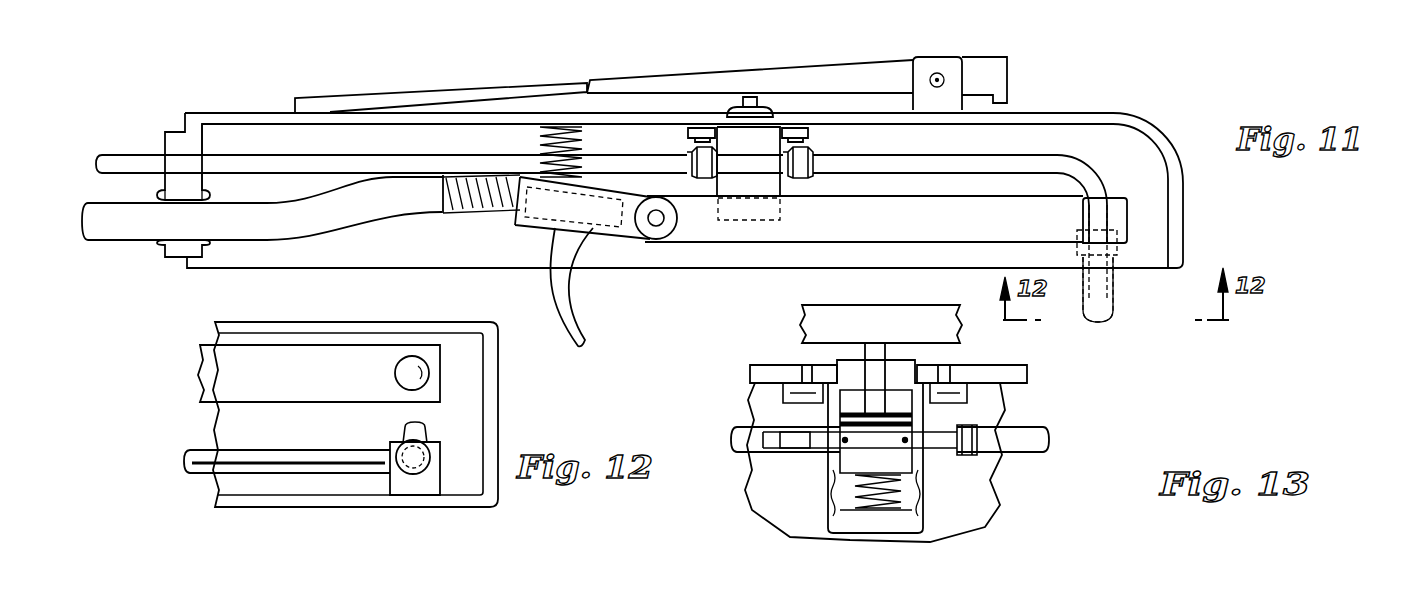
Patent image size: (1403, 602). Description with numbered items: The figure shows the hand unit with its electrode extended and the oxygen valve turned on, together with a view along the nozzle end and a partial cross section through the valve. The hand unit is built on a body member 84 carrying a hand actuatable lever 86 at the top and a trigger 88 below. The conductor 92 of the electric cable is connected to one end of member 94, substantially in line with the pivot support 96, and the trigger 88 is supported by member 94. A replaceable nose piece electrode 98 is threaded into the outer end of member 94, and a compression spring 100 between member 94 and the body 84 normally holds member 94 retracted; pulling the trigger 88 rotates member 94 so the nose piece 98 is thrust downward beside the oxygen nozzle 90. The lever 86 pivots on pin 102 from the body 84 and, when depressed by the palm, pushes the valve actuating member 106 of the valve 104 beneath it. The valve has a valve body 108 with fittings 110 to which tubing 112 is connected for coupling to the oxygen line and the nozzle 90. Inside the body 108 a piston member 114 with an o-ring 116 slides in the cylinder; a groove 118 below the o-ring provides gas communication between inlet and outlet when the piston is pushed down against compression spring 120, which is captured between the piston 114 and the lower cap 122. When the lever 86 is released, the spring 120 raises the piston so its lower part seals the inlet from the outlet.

In FIG. 11, the body member 84 is at (213, 113).
In FIG. 11, the hand actuatable lever 86 is at (467, 90).
In FIG. 13, the hand actuatable lever 86 is at (867, 315).
In FIG. 11, the trigger 88 is at (555, 295).
In FIG. 11, the oxygen nozzle 90 is at (1102, 302).
In FIG. 12, the oxygen nozzle 90 is at (427, 440).
In FIG. 11, the conductor 92 is at (477, 200).
In FIG. 11, the member 94 is at (813, 230).
In FIG. 11, the pivot support 96 is at (655, 226).
In FIG. 12, the nose piece electrode 98 is at (407, 358).
In FIG. 11, the compression spring 100 is at (537, 138).
In FIG. 11, the pin 102 is at (938, 73).
In FIG. 11, the valve 104 is at (732, 142).
In FIG. 13, the valve 104 is at (875, 446).
In FIG. 11, the valve actuating member 106 is at (750, 100).
In FIG. 13, the valve actuating member 106 is at (870, 348).
In FIG. 13, the valve body 108 is at (833, 477).
In FIG. 13, the fittings 110 is at (793, 447).
In FIG. 11, the tubing or hose 112 is at (1052, 153).
In FIG. 13, the tubing or hose 112 is at (740, 423).
In FIG. 13, the piston member 114 is at (897, 417).
In FIG. 13, the o-ring 116 is at (857, 420).
In FIG. 13, the groove 118 is at (893, 437).
In FIG. 13, the compression spring 120 is at (850, 490).
In FIG. 13, the lower cap 122 is at (910, 520).